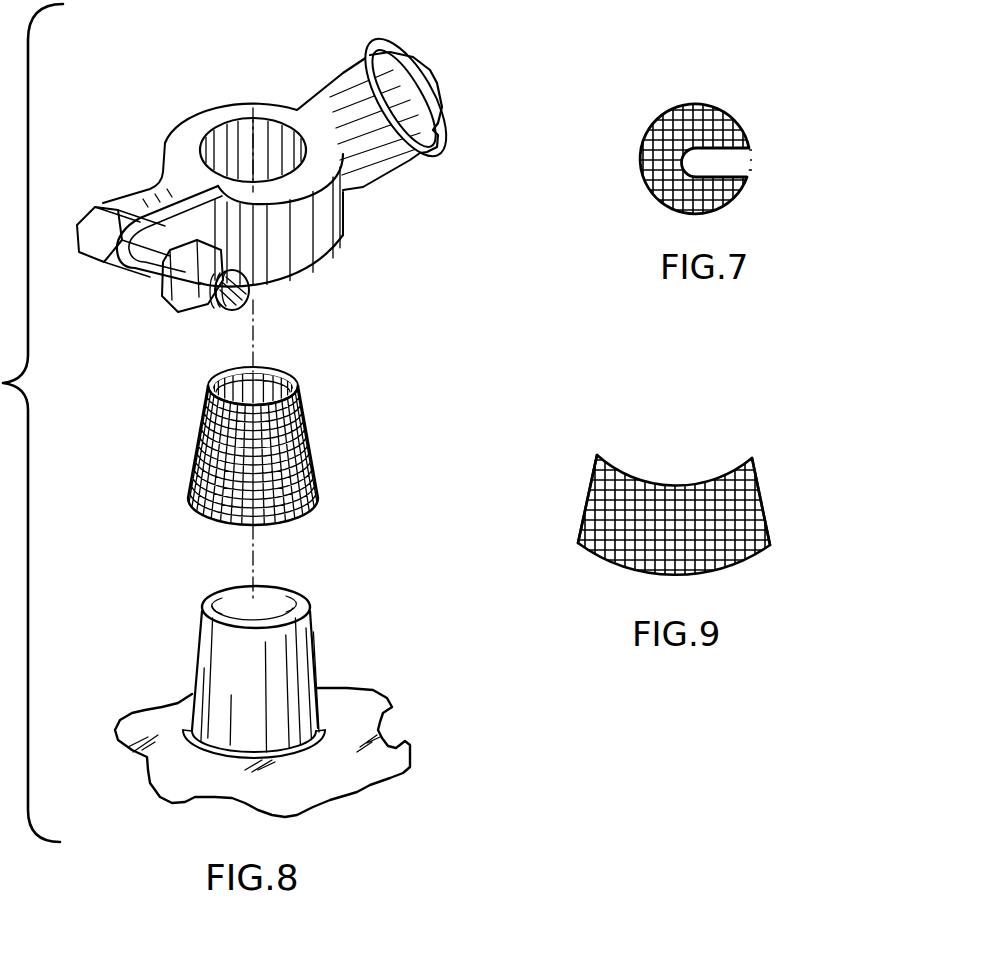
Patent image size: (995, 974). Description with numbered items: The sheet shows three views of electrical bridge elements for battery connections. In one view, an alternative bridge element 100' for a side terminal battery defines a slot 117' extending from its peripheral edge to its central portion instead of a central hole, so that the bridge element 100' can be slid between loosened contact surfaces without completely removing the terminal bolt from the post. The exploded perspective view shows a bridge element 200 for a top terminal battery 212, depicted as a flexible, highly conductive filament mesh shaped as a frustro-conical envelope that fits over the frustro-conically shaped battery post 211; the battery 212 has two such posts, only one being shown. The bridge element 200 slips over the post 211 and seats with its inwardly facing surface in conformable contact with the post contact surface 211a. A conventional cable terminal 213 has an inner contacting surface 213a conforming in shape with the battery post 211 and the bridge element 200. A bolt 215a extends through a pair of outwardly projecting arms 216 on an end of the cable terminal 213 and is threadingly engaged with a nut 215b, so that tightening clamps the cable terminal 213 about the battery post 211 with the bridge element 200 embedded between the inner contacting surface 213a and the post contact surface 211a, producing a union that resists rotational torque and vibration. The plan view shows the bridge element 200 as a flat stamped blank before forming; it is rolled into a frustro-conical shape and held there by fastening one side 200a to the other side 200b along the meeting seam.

In FIG. 7, the bridge element 100' is at (699, 113).
In FIG. 7, the slot 117' is at (774, 172).
In FIG. 8, the bridge element 200 is at (168, 441).
In FIG. 9, the bridge element 200 is at (737, 505).
In FIG. 9, the side 200a is at (582, 503).
In FIG. 9, the side 200b is at (752, 477).
In FIG. 8, the battery post 211 is at (313, 641).
In FIG. 8, the post contact surface 211a is at (247, 672).
In FIG. 8, the top terminal battery 212 is at (405, 741).
In FIG. 8, the cable terminal 213 is at (267, 106).
In FIG. 8, the inner contacting surface 213a is at (243, 153).
In FIG. 8, the bolt 215a is at (82, 226).
In FIG. 8, the nut 215b is at (201, 300).
In FIG. 8, the outwardly projecting arms 216 is at (158, 288).